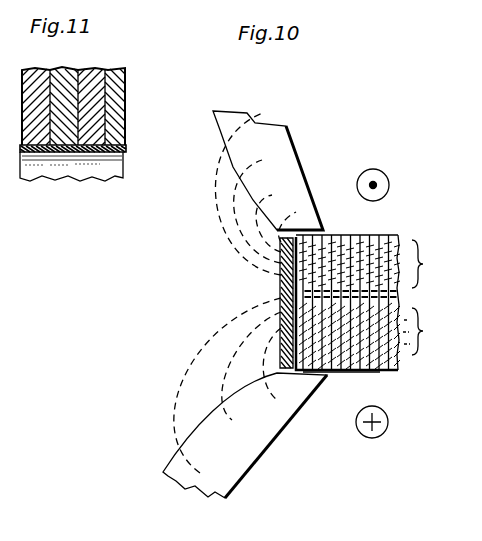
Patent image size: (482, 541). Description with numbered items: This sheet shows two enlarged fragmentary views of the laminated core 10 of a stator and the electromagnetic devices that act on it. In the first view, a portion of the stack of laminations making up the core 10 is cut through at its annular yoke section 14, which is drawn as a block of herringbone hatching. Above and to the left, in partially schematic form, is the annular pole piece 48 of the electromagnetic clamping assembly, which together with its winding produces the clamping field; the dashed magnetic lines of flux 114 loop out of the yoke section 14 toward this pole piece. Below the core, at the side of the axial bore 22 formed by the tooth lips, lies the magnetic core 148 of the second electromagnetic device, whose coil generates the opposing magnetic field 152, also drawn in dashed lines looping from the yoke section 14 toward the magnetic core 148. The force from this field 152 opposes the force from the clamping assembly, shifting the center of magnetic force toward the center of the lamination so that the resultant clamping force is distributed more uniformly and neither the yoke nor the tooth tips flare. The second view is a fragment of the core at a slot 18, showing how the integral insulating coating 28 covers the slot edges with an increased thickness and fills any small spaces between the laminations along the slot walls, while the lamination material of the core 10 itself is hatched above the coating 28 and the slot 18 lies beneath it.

In FIG. 11, the core 10 is at (136, 75).
In FIG. 10, the core 10 is at (336, 234).
In FIG. 11, the integral insulating coating 28 is at (127, 150).
In FIG. 11, the slot 18 is at (98, 170).
In FIG. 10, the pole piece 48 is at (278, 149).
In FIG. 10, the magnetic core 148 is at (267, 420).
In FIG. 10, the annular yoke section 14 is at (368, 236).
In FIG. 10, the magnetic lines of flux 114 is at (429, 264).
In FIG. 10, the magnetic field 152 is at (425, 331).
In FIG. 10, the axial bore 22 is at (382, 372).